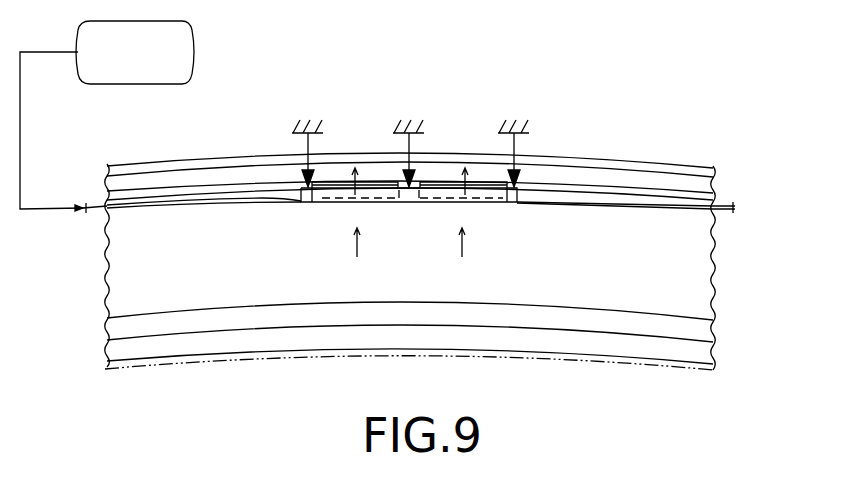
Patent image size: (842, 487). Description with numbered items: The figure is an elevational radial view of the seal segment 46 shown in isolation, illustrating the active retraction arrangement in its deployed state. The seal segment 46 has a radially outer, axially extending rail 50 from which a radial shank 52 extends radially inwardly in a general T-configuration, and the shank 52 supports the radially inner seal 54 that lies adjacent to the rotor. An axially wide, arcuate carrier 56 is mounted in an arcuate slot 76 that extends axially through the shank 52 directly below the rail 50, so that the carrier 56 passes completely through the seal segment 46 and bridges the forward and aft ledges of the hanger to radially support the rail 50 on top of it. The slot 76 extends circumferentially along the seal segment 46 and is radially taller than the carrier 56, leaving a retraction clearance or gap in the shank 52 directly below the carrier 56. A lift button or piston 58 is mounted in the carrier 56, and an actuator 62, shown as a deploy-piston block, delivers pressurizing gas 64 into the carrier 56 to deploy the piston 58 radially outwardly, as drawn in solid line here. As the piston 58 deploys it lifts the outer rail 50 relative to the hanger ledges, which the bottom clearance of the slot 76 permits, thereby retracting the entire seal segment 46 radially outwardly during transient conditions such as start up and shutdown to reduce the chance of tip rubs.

The seal segment 46 is at (728, 290).
The rail 50 is at (664, 163).
The shank 52 is at (236, 261).
The seal 54 is at (716, 352).
The carrier 56 is at (515, 206).
The piston 58 is at (373, 182).
The actuator 62 is at (193, 53).
The pressurizing gas 64 is at (20, 132).
The slot 76 is at (405, 200).